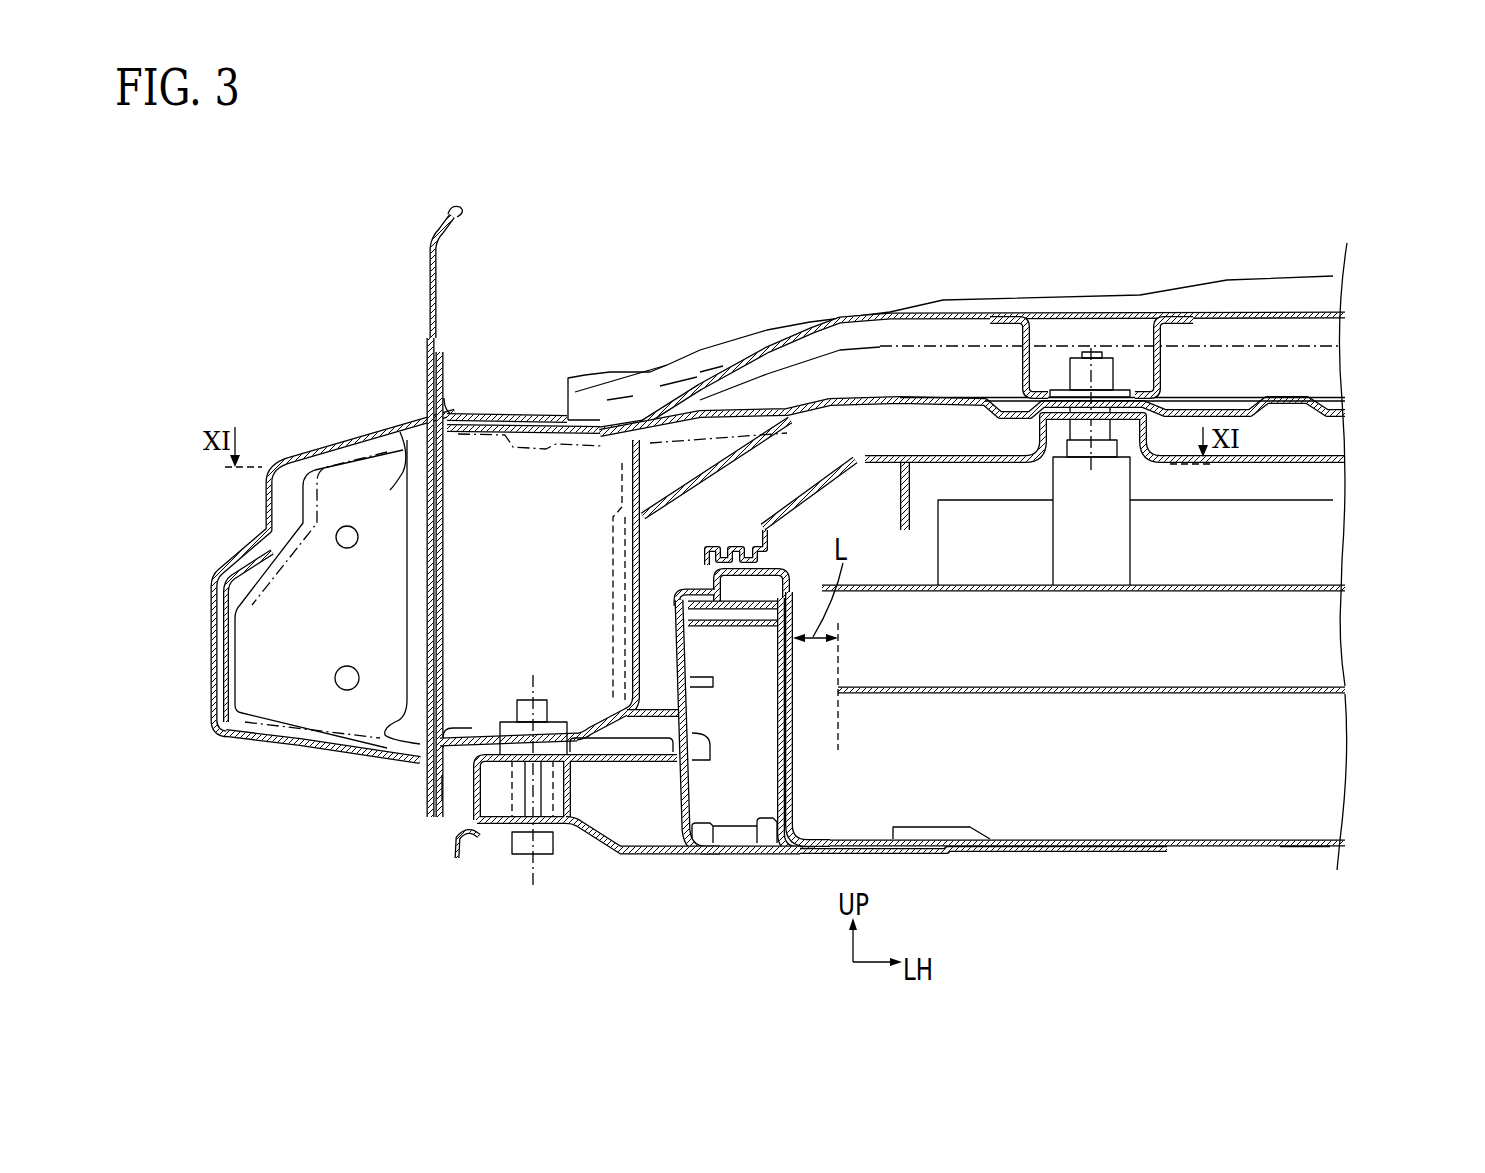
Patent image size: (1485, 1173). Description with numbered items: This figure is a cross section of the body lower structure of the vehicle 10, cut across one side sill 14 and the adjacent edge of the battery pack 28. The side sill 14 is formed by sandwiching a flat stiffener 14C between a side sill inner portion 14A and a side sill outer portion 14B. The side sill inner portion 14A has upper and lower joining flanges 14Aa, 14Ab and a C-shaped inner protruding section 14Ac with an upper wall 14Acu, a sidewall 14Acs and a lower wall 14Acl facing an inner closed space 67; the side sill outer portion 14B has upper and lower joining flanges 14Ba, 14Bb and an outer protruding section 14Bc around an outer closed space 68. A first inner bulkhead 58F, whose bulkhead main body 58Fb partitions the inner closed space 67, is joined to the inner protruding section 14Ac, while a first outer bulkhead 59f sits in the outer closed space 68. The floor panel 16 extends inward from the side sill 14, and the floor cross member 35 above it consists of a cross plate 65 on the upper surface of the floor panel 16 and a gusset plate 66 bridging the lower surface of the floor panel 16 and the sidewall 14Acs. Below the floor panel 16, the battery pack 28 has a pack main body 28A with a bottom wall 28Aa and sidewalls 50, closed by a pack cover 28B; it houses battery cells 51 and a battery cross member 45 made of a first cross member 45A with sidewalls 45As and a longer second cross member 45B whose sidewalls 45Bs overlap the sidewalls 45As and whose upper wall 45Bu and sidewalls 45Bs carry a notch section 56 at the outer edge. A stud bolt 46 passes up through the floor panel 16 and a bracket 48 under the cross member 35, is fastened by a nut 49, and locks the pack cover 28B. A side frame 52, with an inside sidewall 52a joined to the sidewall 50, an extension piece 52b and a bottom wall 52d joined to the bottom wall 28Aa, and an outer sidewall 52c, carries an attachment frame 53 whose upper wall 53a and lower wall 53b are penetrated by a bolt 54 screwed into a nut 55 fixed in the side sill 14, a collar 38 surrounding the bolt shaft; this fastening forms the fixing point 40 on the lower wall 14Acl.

The vehicle 10 is at (485, 217).
The side sill 14 is at (317, 453).
The side sill inner portion 14A is at (537, 523).
The upper joining flange 14Aa is at (440, 366).
The lower joining flange 14Ab is at (443, 790).
The inner protruding section 14Ac is at (640, 563).
The sidewall 14Acs is at (683, 650).
The lower wall 14Acl is at (590, 755).
The upper wall 14Acu is at (543, 416).
The side sill outer portion 14B is at (267, 510).
The upper joining flange 14Ba is at (423, 360).
The lower joining flange 14Bb is at (422, 772).
The outer protruding section 14Bc is at (213, 623).
The stiffener 14C is at (430, 587).
The floor panel 16 is at (1298, 393).
The battery pack 28 is at (1104, 690).
The pack main body 28A is at (1230, 846).
The bottom wall 28Aa is at (1307, 848).
The pack cover 28B is at (1300, 446).
The floor cross member 35 is at (1252, 310).
The collar 38 is at (452, 860).
The fixing points 40 is at (556, 710).
The battery cross member 45 is at (1273, 584).
The first cross member 45A is at (1307, 683).
The front and rear sidewalls 45As is at (1317, 780).
The second cross member 45B is at (1317, 583).
The front and rear sidewalls 45Bs is at (1317, 633).
The upper wall 45Bu is at (910, 585).
The stud bolt 46 is at (1133, 520).
The bracket 48 is at (1029, 352).
The nut 49 is at (1113, 370).
The sidewall 50 is at (803, 776).
The battery cell 51 is at (1307, 500).
The side frame 52 is at (682, 838).
The inside sidewall 52a is at (795, 717).
The extension piece 52b is at (963, 852).
The sidewall 52c is at (675, 795).
The bottom wall 52d is at (773, 857).
The attachment frame 53 is at (611, 863).
The upper wall 53a is at (520, 820).
The lower wall 53b is at (587, 837).
The bolt 54 is at (523, 852).
The nut 55 is at (470, 762).
The notch section 56 is at (818, 598).
The first inner bulkhead 58F is at (513, 416).
The bulkhead main body 58Fb is at (600, 430).
The first outer bulkhead 59f is at (300, 482).
The cross plate 65 is at (937, 312).
The gusset plate 66 is at (690, 475).
The inner closed space 67 is at (445, 730).
The outer closed space 68 is at (385, 745).